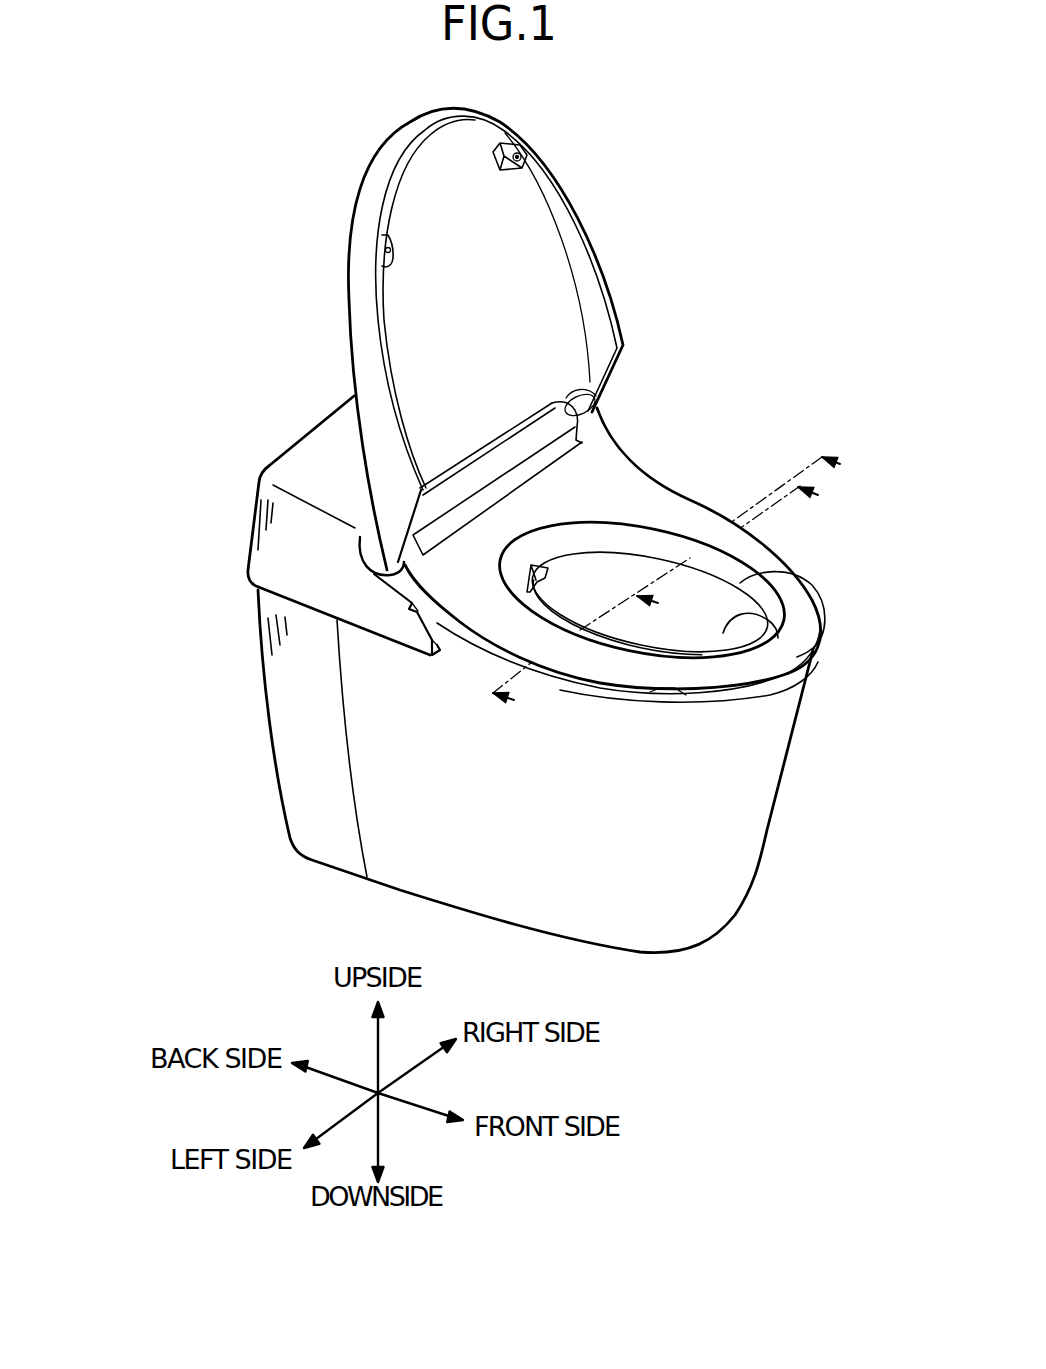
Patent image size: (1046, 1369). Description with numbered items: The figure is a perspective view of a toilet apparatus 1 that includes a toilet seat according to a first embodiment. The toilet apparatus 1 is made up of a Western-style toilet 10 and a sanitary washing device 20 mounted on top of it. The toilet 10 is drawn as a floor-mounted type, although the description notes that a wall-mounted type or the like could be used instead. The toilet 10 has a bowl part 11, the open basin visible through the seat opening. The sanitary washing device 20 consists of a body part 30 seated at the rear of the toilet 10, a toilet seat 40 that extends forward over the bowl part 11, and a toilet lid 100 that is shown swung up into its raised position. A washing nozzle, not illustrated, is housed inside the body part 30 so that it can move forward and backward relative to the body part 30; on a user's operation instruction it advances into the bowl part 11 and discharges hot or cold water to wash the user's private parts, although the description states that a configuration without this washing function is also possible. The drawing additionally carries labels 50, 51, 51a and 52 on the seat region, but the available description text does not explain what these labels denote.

The toilet apparatus 1 is at (683, 212).
The toilet 10 is at (743, 830).
The bowl part 11 is at (808, 650).
The sanitary washing device 20 is at (150, 388).
The body part 30 is at (243, 547).
The toilet seat 40 is at (462, 592).
The toilet seat 50 is at (712, 500).
The seat body 51 is at (612, 478).
The seat surface 51a is at (660, 507).
The seat inner edge portion 52 is at (740, 587).
The toilet lid 100 is at (355, 360).